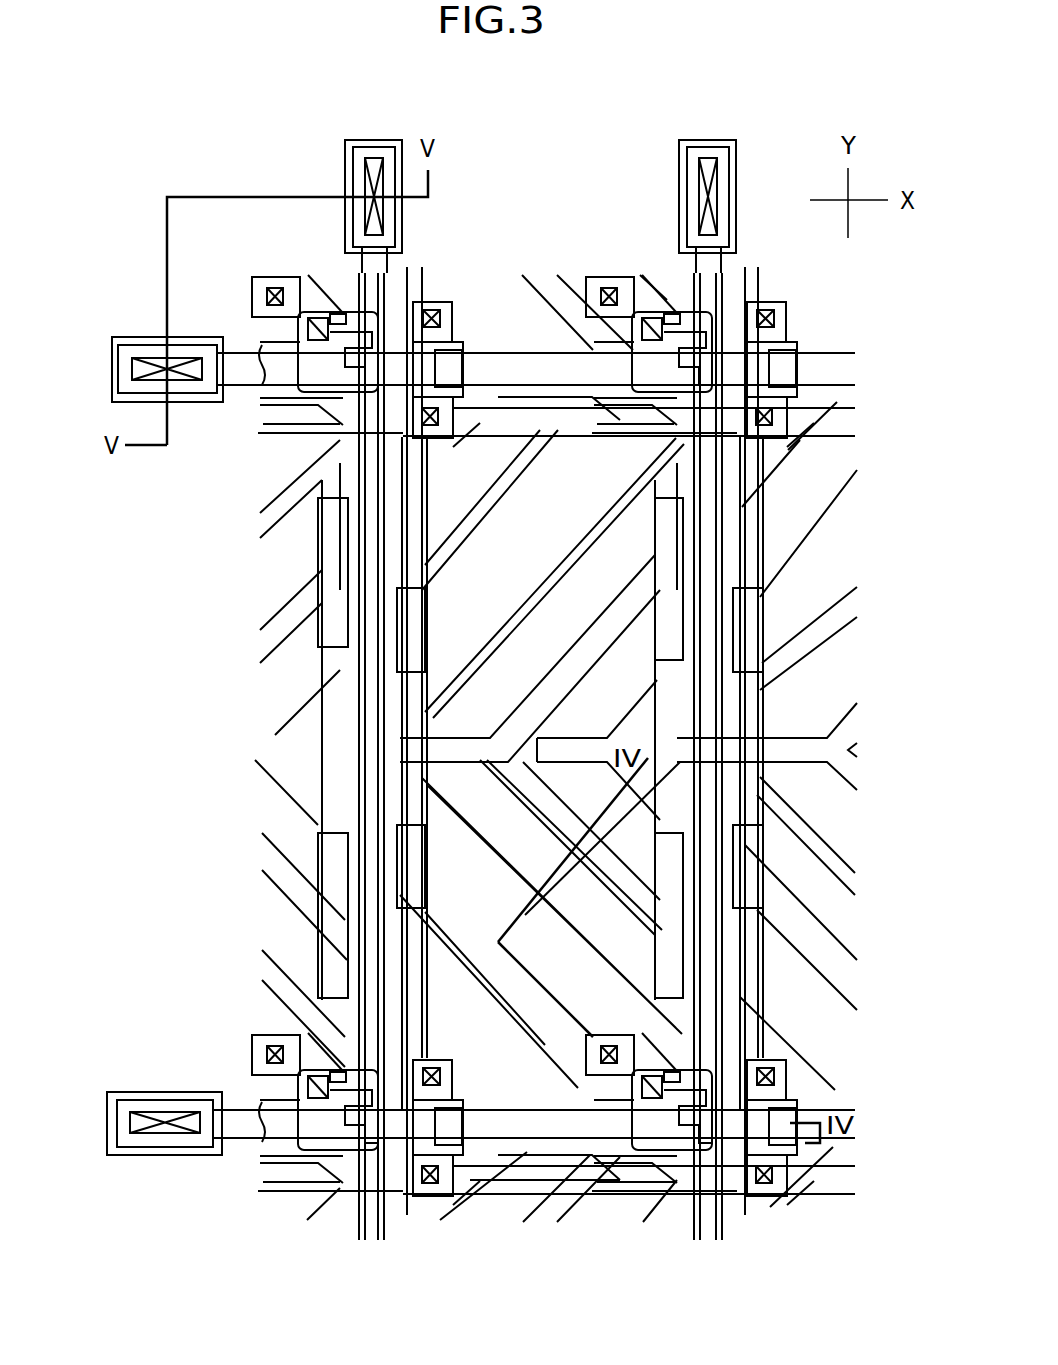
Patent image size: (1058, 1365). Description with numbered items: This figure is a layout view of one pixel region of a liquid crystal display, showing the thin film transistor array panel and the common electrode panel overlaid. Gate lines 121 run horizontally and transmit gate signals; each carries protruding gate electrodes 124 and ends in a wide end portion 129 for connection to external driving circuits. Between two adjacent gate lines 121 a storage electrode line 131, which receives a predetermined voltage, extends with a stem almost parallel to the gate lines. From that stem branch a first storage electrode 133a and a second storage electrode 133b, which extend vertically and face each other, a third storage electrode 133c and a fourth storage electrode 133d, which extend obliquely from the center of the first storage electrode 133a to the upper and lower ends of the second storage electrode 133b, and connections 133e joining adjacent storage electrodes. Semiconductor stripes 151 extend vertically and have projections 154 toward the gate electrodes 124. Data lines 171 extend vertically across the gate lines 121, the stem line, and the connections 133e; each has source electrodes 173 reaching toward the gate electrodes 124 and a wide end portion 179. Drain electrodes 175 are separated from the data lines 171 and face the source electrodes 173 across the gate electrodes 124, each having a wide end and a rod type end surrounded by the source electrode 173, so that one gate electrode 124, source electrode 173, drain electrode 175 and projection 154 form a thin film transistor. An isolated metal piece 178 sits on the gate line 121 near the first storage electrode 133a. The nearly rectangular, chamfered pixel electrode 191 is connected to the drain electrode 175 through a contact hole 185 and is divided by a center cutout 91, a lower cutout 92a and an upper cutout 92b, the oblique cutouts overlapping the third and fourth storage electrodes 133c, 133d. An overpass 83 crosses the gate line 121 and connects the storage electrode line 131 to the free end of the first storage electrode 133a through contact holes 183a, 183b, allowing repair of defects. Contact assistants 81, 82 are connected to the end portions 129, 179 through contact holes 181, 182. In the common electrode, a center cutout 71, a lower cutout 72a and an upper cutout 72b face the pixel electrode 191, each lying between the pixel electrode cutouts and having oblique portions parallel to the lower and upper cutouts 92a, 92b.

The gate line 121 is at (592, 352).
The gate electrode 124 is at (642, 1132).
The end portion of the gate line 129 is at (118, 382).
The storage electrode line 131 is at (512, 430).
The first storage electrode 133a is at (372, 542).
The second storage electrode 133b is at (764, 692).
The third storage electrode 133c is at (562, 566).
The fourth storage electrode 133d is at (482, 835).
The connection 133e is at (762, 775).
The semiconductor stripe 151 is at (725, 540).
The projection of the semiconductor stripe 154 is at (602, 1122).
The data line 171 is at (385, 818).
The source electrode 173 is at (690, 1132).
The drain electrode 175 is at (578, 1150).
The isolated metal piece 178 is at (383, 1152).
The end portion of the data line 179 is at (372, 160).
The contact hole 181 is at (160, 360).
The contact hole 182 is at (386, 226).
The contact hole 183a is at (428, 1175).
The contact hole 183b is at (433, 1062).
The contact hole 185 is at (598, 1050).
The pixel electrode 191 is at (522, 1142).
The center cutout 71 is at (482, 722).
The lower cutout 72a is at (455, 932).
The upper cutout 72b is at (487, 508).
The contact assistant 81 is at (112, 354).
The contact assistant 82 is at (348, 226).
The overpass 83 is at (438, 305).
The center cutout 91 is at (792, 740).
The lower cutout 92a is at (755, 925).
The upper cutout 92b is at (410, 640).